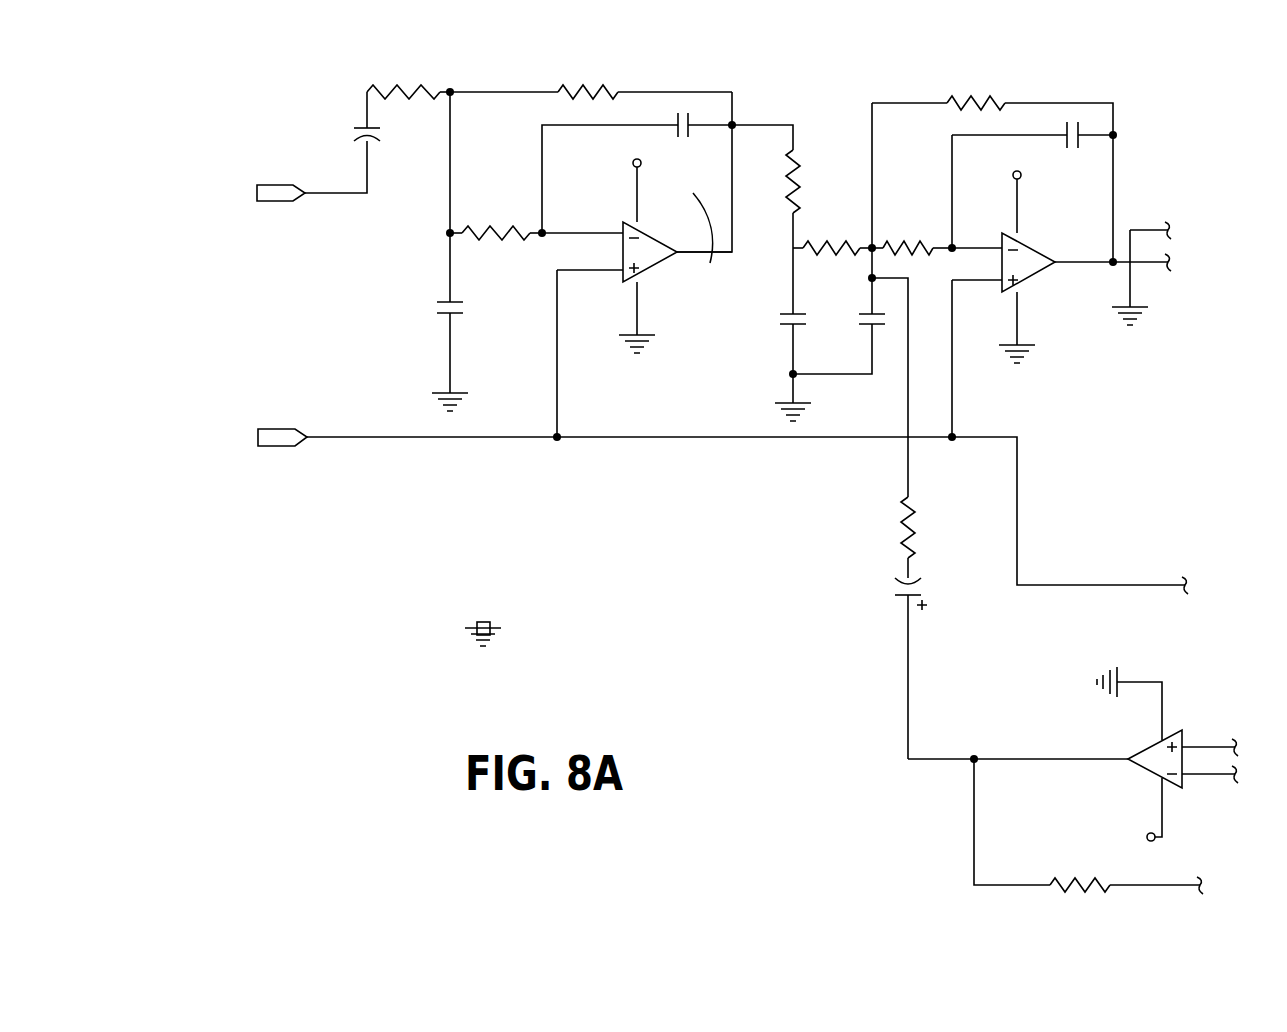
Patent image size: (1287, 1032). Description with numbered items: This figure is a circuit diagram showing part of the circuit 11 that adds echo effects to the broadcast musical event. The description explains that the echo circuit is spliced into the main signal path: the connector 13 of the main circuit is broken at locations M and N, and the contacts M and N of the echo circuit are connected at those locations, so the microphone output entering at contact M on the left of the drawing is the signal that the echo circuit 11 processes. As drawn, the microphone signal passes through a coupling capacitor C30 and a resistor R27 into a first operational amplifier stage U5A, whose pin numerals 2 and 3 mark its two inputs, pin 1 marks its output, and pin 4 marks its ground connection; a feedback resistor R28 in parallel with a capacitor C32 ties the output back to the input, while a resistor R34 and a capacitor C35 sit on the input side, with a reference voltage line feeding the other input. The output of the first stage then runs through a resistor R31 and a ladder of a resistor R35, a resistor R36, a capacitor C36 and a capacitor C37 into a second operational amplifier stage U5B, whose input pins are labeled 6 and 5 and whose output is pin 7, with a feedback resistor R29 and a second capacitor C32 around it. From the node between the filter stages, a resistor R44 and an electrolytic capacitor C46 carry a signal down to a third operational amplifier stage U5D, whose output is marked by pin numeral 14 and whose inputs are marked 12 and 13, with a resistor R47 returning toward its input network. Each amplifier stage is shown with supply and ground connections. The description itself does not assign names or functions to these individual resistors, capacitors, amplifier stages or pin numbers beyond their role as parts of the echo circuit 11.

The circuit 11 is at (1145, 103).
The op-amp U5A output pin 1 is at (704, 240).
The op-amp U5A inverting input pin 2 is at (582, 222).
The op-amp U5A non-inverting input pin 3 is at (590, 344).
The op-amp ground pin 4 is at (637, 315).
The op-amp U5B non-inverting input pin 5 is at (977, 345).
The op-amp U5B inverting input pin 6 is at (977, 238).
The op-amp U5B output pin 7 is at (1113, 252).
The op-amp U5D non-inverting input pin 12 is at (1210, 739).
The connector 13 is at (1210, 767).
The op-amp U5D output pin 14 is at (1018, 745).
The resistor 120K R27 is at (408, 90).
The resistor 120K R28 is at (645, 90).
The resistor 120K R29 is at (992, 105).
The resistor 56K R31 is at (783, 186).
The resistor 33K R34 is at (496, 234).
The resistor 56K R35 is at (832, 249).
The resistor 33K R36 is at (912, 249).
The resistor 120K R44 is at (933, 536).
The resistor 120K R47 is at (1088, 841).
The capacitor 33uF C30 is at (331, 126).
The capacitor 220pF C32 is at (637, 169).
The capacitor 3300pF C35 is at (415, 348).
The capacitor 3300pF C36 is at (762, 334).
The capacitor 3300pF C37 is at (839, 238).
The capacitor 3.3uF C46 is at (866, 664).
The op-amp MC34004 U5A is at (650, 294).
The op-amp MC34004 U5B is at (1061, 300).
The op-amp MC34004 U5D is at (1091, 755).